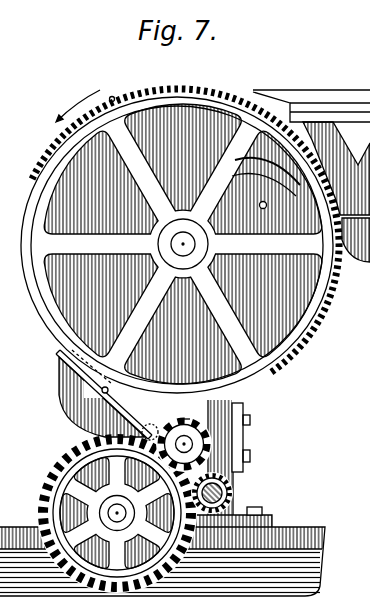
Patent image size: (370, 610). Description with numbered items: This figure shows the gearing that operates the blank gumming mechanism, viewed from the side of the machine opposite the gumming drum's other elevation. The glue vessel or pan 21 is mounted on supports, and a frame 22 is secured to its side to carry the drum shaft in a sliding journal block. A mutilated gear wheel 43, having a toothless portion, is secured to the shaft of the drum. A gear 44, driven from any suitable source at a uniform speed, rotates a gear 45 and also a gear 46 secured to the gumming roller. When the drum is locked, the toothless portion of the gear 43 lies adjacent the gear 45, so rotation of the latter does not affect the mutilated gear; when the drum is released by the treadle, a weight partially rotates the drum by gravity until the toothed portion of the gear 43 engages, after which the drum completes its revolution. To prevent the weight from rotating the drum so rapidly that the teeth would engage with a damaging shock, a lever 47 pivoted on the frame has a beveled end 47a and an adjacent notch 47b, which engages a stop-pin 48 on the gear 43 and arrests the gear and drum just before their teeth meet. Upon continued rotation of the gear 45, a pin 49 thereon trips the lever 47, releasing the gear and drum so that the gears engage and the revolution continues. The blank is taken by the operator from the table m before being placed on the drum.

The glue vessel or pan 21 is at (303, 536).
The frame 22 is at (235, 506).
The mutilated gear wheel 43 is at (322, 324).
The gear 44 is at (231, 486).
The gear 45 is at (212, 452).
The gear 46 is at (208, 444).
The lever 47 is at (118, 402).
The beveled end 47a is at (61, 357).
The notch 47b is at (82, 380).
The stop-pin 48 is at (114, 97).
The pin 49 is at (185, 416).
The table m is at (351, 97).